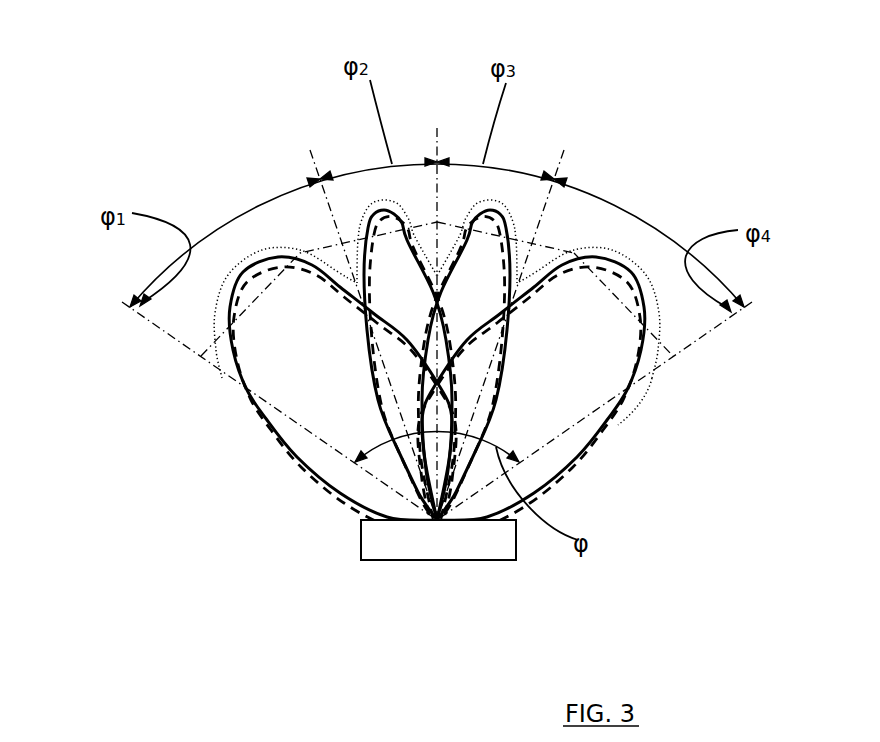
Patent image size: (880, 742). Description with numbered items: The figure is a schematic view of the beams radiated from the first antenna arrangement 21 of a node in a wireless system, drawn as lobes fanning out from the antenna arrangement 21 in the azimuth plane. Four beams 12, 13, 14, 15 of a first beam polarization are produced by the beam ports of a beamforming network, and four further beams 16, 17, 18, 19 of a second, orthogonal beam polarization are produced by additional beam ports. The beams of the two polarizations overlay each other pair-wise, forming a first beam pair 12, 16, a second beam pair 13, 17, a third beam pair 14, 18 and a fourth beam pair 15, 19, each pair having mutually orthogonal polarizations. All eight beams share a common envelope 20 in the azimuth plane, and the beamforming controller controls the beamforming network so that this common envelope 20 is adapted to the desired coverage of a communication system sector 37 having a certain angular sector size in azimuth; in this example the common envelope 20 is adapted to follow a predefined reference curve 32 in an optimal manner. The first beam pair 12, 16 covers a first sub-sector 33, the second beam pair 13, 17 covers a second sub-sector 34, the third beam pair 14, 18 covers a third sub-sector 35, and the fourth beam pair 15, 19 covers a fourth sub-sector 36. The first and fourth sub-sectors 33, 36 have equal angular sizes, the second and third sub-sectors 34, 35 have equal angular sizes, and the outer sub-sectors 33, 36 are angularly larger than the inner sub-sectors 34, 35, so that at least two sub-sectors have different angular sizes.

The beam 12 is at (347, 502).
The beam 13 is at (374, 196).
The beam 14 is at (500, 200).
The beam 15 is at (592, 434).
The beam 16 is at (298, 471).
The beam 17 is at (366, 212).
The beam 18 is at (503, 210).
The beam 19 is at (557, 478).
The common envelope 20 is at (222, 378).
The first antenna arrangement 21 is at (421, 559).
The predefined reference curve 32 is at (673, 356).
The first sub-sector 33 is at (266, 238).
The second sub-sector 34 is at (405, 190).
The third sub-sector 35 is at (460, 190).
The fourth sub-sector 36 is at (607, 223).
The communication system sector 37 is at (165, 343).